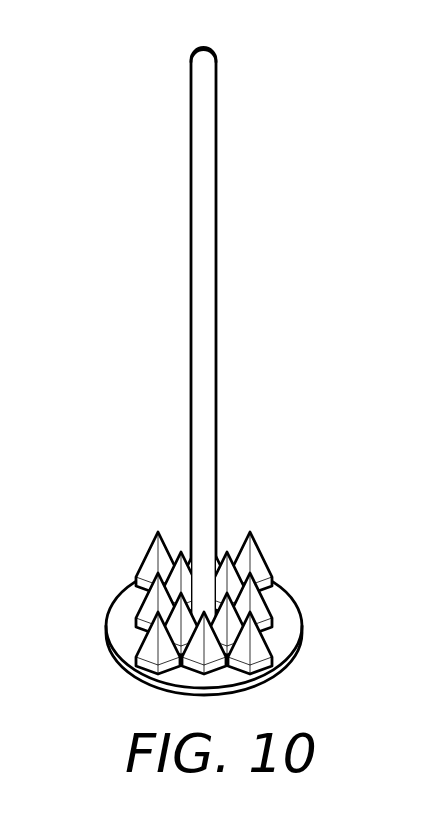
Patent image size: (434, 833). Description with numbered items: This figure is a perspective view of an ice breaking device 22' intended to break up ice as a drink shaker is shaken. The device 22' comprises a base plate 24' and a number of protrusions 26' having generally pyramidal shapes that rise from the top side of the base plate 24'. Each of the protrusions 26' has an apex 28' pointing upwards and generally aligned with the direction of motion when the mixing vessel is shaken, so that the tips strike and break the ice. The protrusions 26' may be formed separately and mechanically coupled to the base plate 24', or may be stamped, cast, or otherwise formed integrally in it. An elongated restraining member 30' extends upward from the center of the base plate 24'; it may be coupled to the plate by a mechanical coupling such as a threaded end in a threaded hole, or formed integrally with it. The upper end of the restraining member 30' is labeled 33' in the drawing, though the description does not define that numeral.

The ice breaking device 22' is at (176, 356).
The base plate 24' is at (177, 629).
The protrusions 26' is at (206, 587).
The apex 28' is at (207, 547).
The elongated restraining member 30' is at (176, 331).
The rounded shaft tip 33' is at (183, 40).